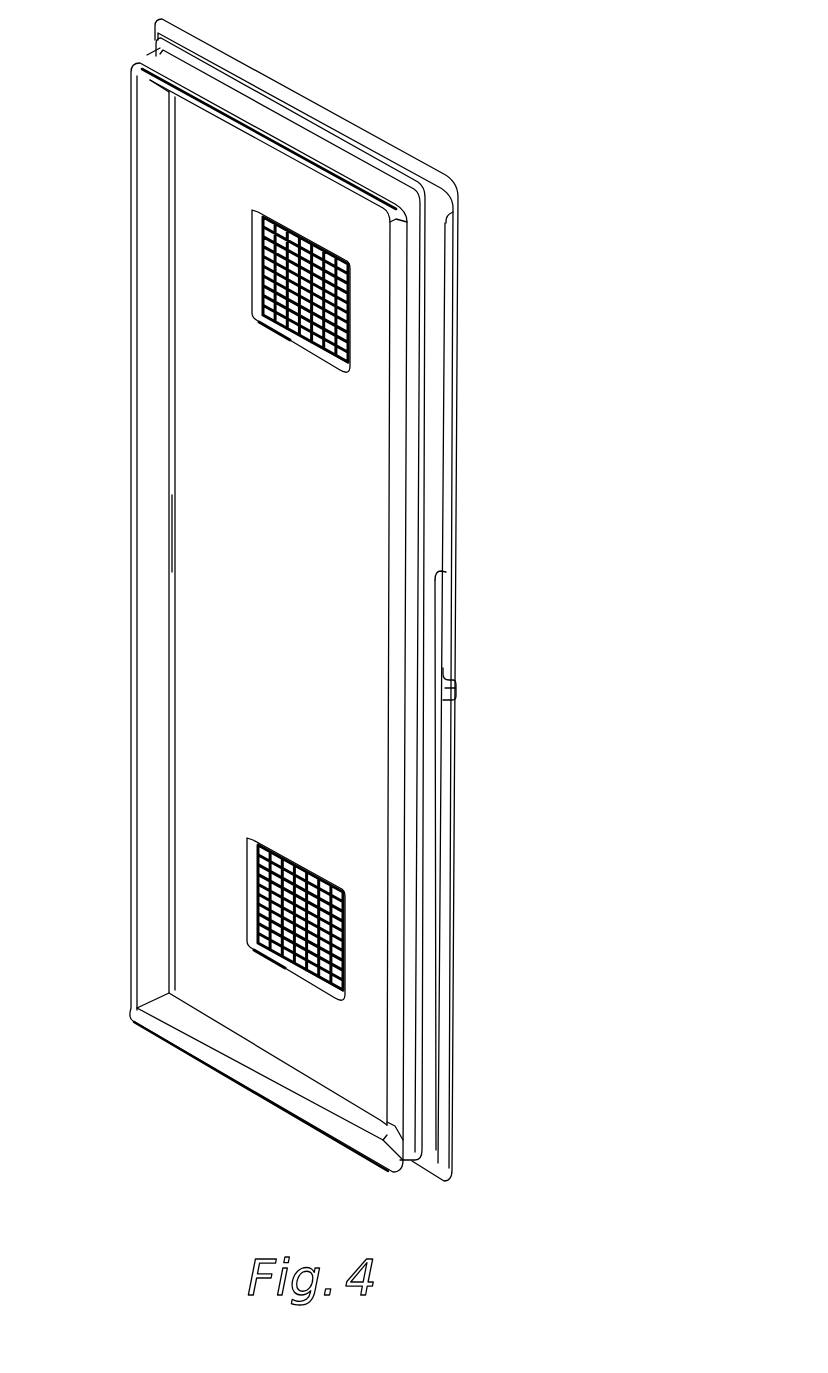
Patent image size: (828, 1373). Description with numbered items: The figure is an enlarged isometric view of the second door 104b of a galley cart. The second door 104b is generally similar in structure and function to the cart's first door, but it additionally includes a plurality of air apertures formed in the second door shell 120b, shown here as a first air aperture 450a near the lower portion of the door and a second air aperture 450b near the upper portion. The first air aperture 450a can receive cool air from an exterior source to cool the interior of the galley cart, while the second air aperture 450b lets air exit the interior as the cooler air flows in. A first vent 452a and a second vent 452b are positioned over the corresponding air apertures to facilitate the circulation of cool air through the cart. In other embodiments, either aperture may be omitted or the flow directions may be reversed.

The second door 104b is at (294, 600).
The second door shell 120b is at (207, 513).
The first air aperture 450a is at (253, 942).
The second air aperture 450b is at (256, 320).
The first vent 452a is at (257, 885).
The second vent 452b is at (263, 263).